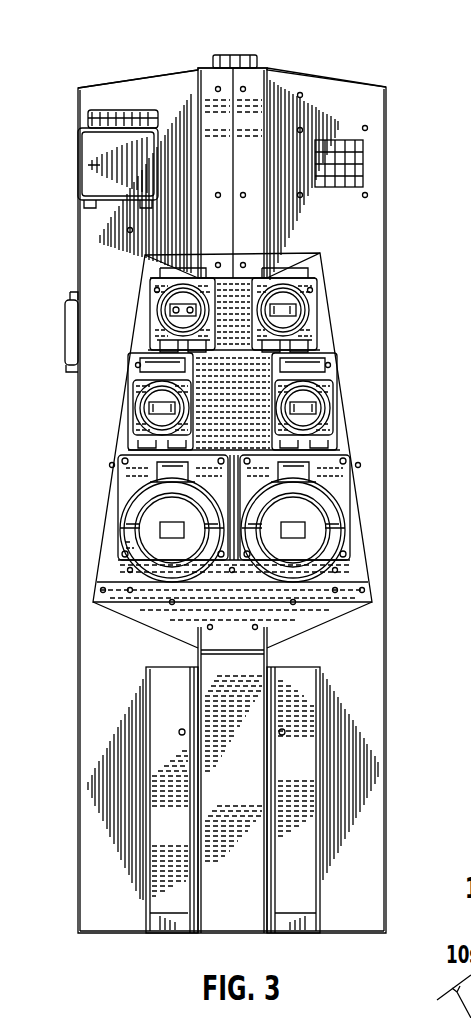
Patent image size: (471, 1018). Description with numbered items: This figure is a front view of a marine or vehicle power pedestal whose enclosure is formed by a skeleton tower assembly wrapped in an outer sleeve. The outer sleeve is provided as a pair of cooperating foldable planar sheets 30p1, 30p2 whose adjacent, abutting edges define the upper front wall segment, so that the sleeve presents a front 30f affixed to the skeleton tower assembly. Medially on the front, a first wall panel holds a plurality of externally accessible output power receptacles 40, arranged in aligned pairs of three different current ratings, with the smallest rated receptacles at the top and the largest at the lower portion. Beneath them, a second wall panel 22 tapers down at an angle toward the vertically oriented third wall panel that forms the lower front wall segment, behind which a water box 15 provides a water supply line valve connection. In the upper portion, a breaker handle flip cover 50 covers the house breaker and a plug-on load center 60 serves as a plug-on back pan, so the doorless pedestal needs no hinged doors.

The water box 15 is at (300, 814).
The second wall panel 22 is at (232, 441).
The front 30f is at (370, 250).
The foldable planar sheet 30p1 is at (328, 95).
The foldable planar sheet 30p2 is at (108, 96).
The output power receptacles 40 is at (325, 530).
The breaker handle flip cover 50 is at (122, 110).
The load center 60 is at (362, 145).